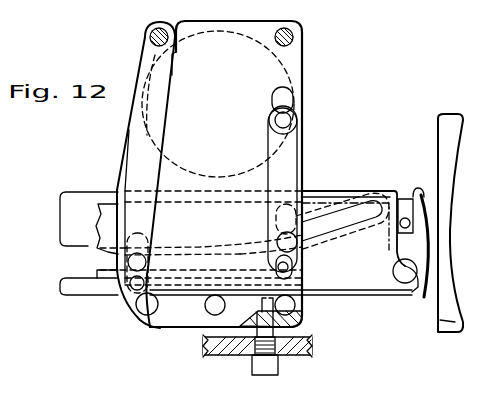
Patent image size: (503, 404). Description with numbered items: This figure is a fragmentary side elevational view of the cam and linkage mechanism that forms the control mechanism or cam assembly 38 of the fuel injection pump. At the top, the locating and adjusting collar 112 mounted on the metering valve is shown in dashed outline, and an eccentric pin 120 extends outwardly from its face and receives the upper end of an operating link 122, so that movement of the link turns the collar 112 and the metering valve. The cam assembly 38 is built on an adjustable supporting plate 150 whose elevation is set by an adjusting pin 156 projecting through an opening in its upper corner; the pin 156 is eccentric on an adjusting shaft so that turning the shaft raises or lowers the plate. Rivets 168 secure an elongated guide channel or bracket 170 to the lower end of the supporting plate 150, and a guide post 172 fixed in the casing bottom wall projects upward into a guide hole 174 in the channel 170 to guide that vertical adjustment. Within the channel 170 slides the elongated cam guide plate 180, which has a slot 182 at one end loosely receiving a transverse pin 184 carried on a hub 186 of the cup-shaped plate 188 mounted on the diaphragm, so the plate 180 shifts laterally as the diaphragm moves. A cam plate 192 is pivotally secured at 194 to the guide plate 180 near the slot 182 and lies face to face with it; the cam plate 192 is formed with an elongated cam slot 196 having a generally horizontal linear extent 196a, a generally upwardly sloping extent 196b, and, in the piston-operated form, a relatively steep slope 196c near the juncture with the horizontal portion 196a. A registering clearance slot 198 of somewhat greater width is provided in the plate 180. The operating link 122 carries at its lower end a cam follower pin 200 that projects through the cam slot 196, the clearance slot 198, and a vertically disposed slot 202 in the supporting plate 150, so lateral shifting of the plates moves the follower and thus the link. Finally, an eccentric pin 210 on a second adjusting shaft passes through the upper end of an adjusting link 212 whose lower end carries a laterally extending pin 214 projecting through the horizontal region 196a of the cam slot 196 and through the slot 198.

The cam assembly 38 is at (368, 322).
The locating and adjusting collar 112 is at (233, 32).
The eccentric pin 120 is at (284, 121).
The operating link 122 is at (295, 162).
The supporting plate 150 is at (298, 68).
The adjusting pin 156 is at (294, 38).
The rivets 168 is at (143, 312).
The guide channel or bracket 170 is at (303, 322).
The guide post 172 is at (262, 372).
The guide hole 174 is at (260, 302).
The cam guide plate 180 is at (446, 262).
The slot 182 is at (405, 198).
The transverse pin 184 is at (410, 225).
The hub 186 is at (434, 212).
The cup-shaped plate 188 is at (450, 328).
The cam plate 192 is at (380, 203).
The pivot 194 is at (407, 284).
The cam slot 196 is at (184, 222).
The horizontal linear extent 196a is at (213, 239).
The upwardly sloping extent 196b is at (330, 232).
The steep slope 196c is at (201, 266).
The clearance slot 198 is at (60, 245).
The cam follower pin 200 is at (290, 243).
The vertically disposed slot 202 is at (290, 268).
The eccentric pin 210 is at (152, 35).
The adjusting link 212 is at (135, 122).
The laterally extending pin 214 is at (133, 262).